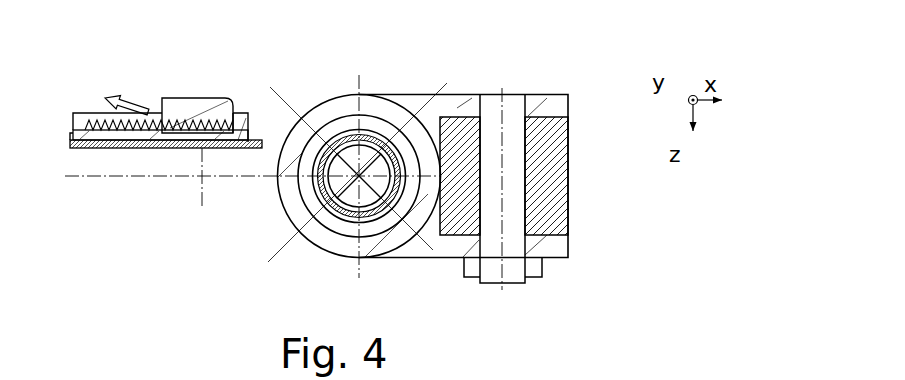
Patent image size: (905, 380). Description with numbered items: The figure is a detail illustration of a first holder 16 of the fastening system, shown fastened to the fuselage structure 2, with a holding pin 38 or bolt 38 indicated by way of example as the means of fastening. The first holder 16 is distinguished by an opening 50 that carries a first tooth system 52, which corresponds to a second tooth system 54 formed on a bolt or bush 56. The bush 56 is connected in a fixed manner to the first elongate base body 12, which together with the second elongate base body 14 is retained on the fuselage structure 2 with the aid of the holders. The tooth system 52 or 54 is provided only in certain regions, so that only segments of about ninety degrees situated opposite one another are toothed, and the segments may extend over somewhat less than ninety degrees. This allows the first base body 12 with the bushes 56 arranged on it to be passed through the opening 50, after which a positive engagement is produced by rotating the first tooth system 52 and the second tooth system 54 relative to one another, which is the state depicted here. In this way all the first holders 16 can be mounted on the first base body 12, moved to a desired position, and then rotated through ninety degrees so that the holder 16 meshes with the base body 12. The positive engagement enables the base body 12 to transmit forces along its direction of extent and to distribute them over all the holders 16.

The fuselage structure 2 is at (558, 205).
The first elongate base body 12 is at (223, 148).
The second elongate base body 14 is at (392, 146).
The first holder 16 is at (544, 79).
The holding pin 38 is at (508, 108).
The opening 50 is at (388, 206).
The first tooth system 52 is at (382, 112).
The second tooth system 54 is at (345, 122).
The bush 56 is at (322, 188).